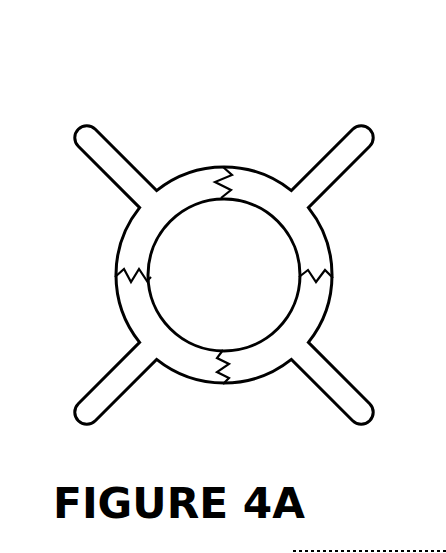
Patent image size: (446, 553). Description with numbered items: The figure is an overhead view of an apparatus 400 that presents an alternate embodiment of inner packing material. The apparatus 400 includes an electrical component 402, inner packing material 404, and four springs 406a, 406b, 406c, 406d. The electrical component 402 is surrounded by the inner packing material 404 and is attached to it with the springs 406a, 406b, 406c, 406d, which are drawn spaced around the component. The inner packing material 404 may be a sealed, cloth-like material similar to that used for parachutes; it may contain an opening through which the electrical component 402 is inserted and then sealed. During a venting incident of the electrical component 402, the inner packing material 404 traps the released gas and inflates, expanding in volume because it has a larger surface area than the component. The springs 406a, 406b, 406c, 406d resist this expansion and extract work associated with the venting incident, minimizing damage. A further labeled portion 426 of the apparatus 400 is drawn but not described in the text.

The apparatus 400 is at (78, 38).
The electrical component 402 is at (298, 297).
The inner packing material 404 is at (350, 163).
The arm end portion 426 is at (365, 168).
The spring 406a is at (223, 162).
The spring 406b is at (113, 277).
The spring 406c is at (334, 287).
The spring 406d is at (225, 388).